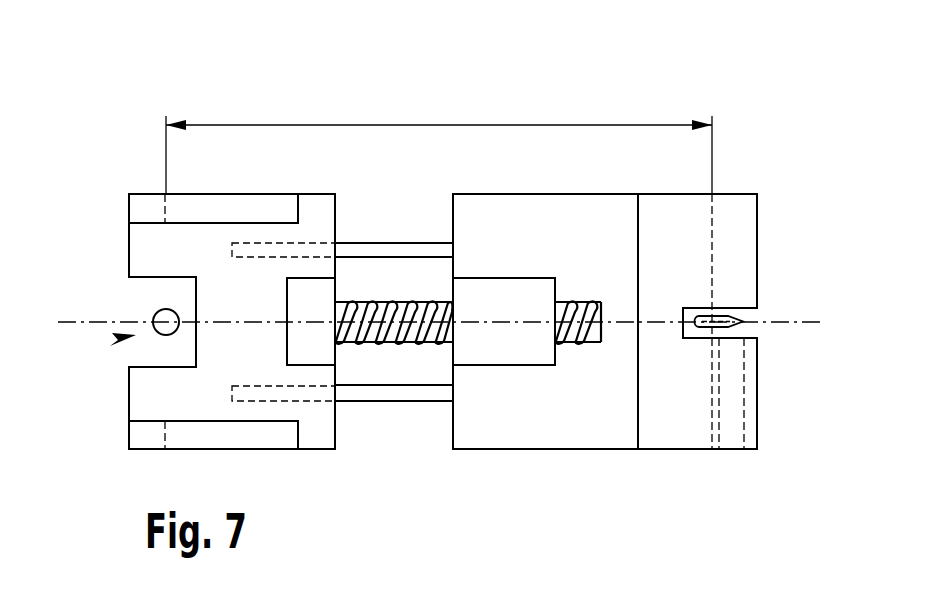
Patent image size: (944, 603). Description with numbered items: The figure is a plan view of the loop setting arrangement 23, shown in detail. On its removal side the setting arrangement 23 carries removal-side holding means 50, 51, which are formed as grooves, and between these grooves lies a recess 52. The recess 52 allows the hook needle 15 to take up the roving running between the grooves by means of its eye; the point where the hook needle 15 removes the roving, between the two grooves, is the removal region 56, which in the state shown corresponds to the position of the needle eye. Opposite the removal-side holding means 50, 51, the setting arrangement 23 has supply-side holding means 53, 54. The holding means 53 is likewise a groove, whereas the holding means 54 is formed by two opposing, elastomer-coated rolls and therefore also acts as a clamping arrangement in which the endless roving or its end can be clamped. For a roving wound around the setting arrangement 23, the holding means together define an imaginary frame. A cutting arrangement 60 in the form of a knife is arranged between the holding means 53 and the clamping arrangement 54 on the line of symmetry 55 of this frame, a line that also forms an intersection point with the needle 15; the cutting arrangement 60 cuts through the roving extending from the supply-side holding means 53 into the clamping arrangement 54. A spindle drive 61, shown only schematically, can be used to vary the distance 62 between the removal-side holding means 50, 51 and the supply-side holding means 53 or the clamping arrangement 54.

The setting arrangement 23 is at (126, 106).
The hook needle 15 is at (160, 314).
The removal-side holding means 50 is at (140, 211).
The removal-side holding means 51 is at (140, 434).
The recess 52 is at (147, 366).
The supply-side holding means 53 is at (740, 270).
The holding means 54 is at (748, 415).
The line of symmetry 55 is at (803, 324).
The removal region 56 is at (126, 338).
The cutting arrangement 60 is at (742, 322).
The spindle drive 61 is at (411, 362).
The distance 62 is at (440, 124).